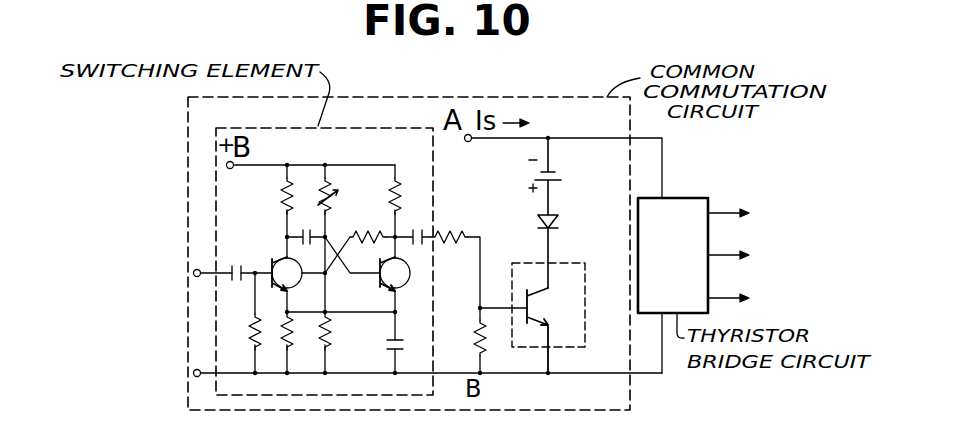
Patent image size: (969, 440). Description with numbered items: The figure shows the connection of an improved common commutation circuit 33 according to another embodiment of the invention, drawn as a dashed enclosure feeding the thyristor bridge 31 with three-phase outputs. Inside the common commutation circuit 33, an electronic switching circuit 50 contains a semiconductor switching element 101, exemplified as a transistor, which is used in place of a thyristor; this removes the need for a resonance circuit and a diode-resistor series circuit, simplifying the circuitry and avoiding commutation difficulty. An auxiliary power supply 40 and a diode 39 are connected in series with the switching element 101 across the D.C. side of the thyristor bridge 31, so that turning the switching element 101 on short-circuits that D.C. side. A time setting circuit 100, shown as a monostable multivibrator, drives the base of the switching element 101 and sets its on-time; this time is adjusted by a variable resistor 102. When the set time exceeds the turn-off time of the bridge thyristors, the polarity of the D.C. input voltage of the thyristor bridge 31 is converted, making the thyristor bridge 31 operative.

The time setting circuit 100 is at (324, 128).
The common commutation circuit 33 is at (547, 97).
The variable resistor 102 is at (353, 203).
The auxiliary power supply 40 is at (563, 168).
The diode 39 is at (560, 222).
The electronic switching circuit 50 is at (583, 243).
The semiconductor switching element 101 is at (548, 312).
The thyristor bridge 31 is at (688, 194).